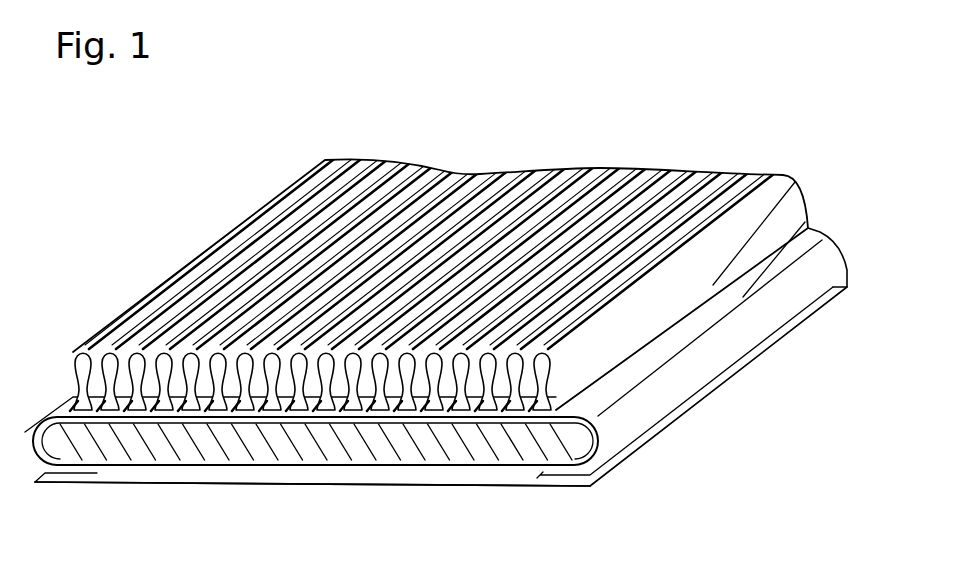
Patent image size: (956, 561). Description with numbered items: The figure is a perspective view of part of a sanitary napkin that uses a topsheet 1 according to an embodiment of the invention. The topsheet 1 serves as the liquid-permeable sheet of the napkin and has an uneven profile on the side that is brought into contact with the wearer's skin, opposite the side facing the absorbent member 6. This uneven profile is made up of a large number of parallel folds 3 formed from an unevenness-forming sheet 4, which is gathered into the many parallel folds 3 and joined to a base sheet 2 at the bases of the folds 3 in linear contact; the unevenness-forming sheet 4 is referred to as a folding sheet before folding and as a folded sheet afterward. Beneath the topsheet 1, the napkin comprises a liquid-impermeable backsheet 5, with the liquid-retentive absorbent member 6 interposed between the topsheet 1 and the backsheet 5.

The topsheet 1 is at (829, 333).
The base sheet 2 is at (690, 377).
The parallel folds 3 is at (230, 283).
The unevenness-forming sheet 4 is at (653, 314).
The backsheet 5 is at (345, 477).
The absorbent member 6 is at (285, 450).